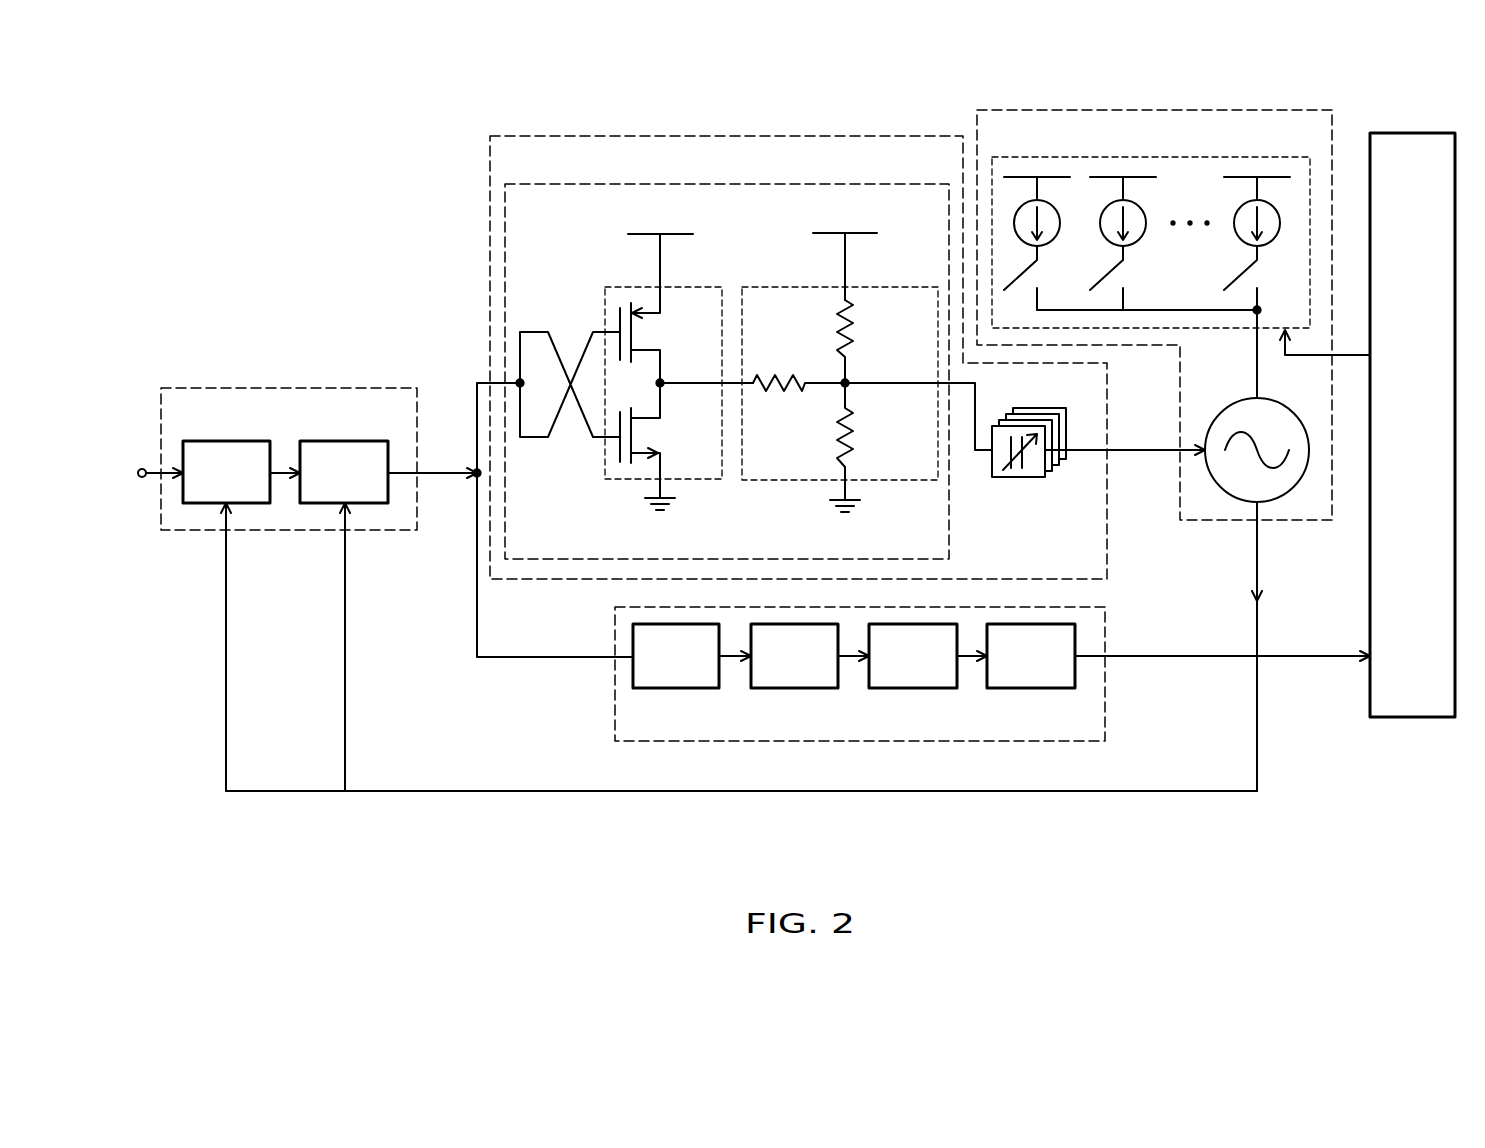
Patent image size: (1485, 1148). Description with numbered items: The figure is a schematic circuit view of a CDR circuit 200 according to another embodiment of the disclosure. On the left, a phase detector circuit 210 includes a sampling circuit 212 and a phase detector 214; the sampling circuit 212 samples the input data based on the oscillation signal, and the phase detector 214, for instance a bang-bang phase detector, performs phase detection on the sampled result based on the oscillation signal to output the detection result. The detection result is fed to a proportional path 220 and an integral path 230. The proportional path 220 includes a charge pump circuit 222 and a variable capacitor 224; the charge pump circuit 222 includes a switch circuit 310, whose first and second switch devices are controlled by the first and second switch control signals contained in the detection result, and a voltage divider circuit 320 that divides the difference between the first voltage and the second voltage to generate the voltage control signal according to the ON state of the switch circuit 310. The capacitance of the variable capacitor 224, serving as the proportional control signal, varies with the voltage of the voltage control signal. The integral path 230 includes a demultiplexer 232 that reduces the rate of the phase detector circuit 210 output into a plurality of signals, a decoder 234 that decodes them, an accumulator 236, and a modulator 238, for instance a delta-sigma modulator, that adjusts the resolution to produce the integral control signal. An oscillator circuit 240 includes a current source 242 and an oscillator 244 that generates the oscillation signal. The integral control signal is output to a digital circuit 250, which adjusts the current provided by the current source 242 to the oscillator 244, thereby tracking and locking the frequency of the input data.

The CDR circuit 200 is at (783, 462).
The phase detector circuit 210 is at (287, 437).
The sampling circuit 212 is at (228, 441).
The phase detector 214 is at (345, 441).
The proportional path 220 is at (878, 136).
The charge pump circuit 222 is at (867, 184).
The variable capacitor 224 is at (1018, 478).
The integral path 230 is at (866, 695).
The demultiplexer 232 is at (677, 688).
The decoder 234 is at (795, 688).
The accumulator 236 is at (913, 688).
The modulator 238 is at (1033, 688).
The oscillator circuit 240 is at (1261, 110).
The current source 242 is at (1246, 157).
The oscillator 244 is at (1222, 410).
The digital circuit 250 is at (1415, 133).
The switch circuit 310 is at (650, 287).
The voltage divider circuit 320 is at (797, 287).